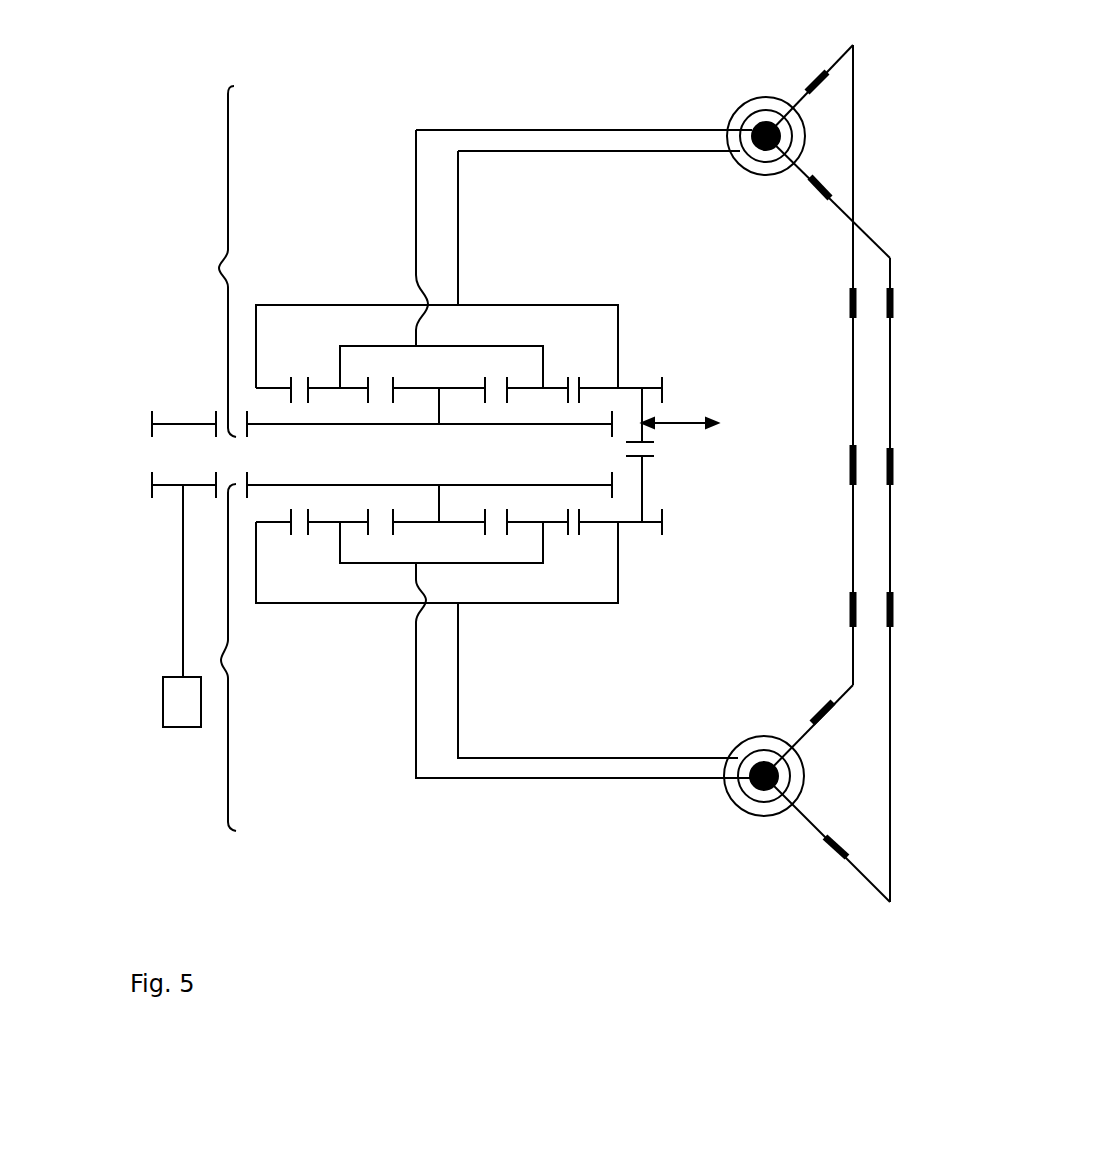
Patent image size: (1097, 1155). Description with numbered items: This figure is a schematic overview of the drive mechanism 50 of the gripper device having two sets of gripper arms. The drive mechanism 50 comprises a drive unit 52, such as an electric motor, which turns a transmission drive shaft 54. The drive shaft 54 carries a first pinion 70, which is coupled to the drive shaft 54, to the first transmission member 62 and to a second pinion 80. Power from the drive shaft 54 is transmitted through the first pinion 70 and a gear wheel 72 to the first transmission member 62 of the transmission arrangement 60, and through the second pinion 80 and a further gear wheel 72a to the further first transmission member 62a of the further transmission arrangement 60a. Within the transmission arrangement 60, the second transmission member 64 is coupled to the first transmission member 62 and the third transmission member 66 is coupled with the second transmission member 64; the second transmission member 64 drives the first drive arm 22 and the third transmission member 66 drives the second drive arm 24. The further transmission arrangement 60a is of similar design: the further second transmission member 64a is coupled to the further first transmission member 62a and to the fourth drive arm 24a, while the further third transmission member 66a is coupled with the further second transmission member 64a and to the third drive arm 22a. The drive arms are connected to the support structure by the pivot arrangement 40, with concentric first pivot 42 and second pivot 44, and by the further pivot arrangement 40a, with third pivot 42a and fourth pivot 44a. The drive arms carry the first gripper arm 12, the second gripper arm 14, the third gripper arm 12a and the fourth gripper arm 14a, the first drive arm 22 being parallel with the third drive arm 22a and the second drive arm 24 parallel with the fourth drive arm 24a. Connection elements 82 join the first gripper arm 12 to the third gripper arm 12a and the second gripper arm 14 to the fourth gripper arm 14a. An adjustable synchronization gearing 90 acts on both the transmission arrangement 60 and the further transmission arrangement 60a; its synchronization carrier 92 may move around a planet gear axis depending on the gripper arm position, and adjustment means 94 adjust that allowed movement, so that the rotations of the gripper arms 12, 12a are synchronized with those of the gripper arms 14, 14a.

The first gripper arm 12 is at (893, 598).
The third gripper arm 12a is at (892, 302).
The second gripper arm 14 is at (855, 595).
The fourth gripper arm 14a is at (857, 288).
The first drive arm 22 is at (838, 833).
The third drive arm 22a is at (822, 172).
The second drive arm 24 is at (835, 703).
The fourth drive arm 24a is at (830, 78).
The pivot arrangement 40 is at (708, 817).
The further pivot arrangement 40a is at (710, 90).
The first pivot 42 is at (735, 803).
The third pivot 42a is at (752, 128).
The second pivot 44 is at (770, 807).
The fourth pivot 44a is at (764, 109).
The drive mechanism 50 is at (153, 786).
The drive unit 52 is at (173, 706).
The transmission drive shaft 54 is at (180, 557).
The transmission arrangement 60 is at (227, 613).
The further transmission arrangement 60a is at (222, 218).
The first transmission member 62 is at (410, 526).
The further first transmission member 62a is at (410, 390).
The second transmission member 64 is at (323, 528).
The further second transmission member 64a is at (318, 387).
The third transmission member 66 is at (270, 526).
The further third transmission member 66a is at (273, 388).
The first pinion 70 is at (170, 483).
The gear wheel 72 is at (283, 480).
The further gear wheel 72a is at (295, 420).
The second pinion 80 is at (182, 420).
The connection element 82 is at (857, 468).
The synchronization gearing 90 is at (677, 553).
The synchronization carrier 92 is at (644, 484).
The adjustment means 94 is at (682, 422).